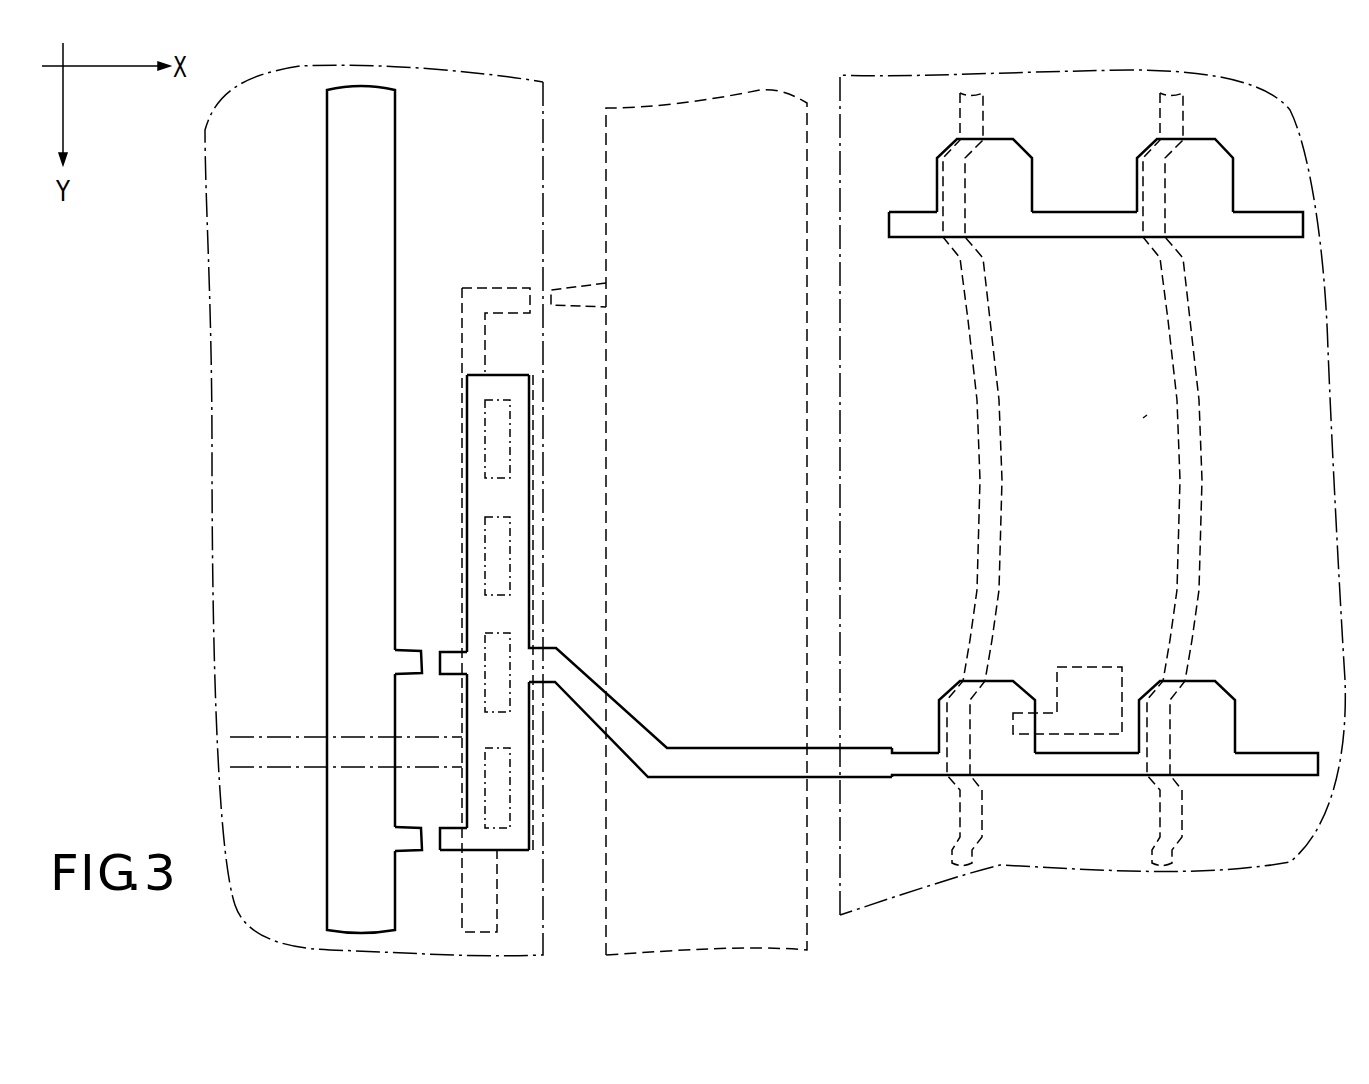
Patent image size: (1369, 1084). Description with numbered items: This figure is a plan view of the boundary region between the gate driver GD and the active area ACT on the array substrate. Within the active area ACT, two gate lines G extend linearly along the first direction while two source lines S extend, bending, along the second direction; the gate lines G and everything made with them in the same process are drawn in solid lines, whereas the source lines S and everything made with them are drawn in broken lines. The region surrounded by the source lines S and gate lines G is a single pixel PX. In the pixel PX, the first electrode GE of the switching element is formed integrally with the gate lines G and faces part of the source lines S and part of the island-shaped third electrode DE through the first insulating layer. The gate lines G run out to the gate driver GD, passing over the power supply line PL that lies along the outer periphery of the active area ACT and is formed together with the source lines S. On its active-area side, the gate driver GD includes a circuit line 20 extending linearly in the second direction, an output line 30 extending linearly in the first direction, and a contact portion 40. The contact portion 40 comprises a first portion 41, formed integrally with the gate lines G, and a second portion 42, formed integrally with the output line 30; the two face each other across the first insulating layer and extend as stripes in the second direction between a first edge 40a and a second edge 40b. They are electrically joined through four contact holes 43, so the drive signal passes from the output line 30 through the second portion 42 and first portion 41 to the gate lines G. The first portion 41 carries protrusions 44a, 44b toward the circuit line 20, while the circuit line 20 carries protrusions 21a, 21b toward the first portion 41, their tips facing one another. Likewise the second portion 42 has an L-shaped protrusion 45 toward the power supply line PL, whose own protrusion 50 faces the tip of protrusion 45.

The circuit line 20 is at (326, 175).
The protrusion 21a is at (405, 677).
The protrusion 21b is at (407, 852).
The output line 30 is at (272, 735).
The contact portion 40 is at (447, 370).
The first edge 40a is at (502, 362).
The second edge 40b is at (508, 858).
The first portion 41 is at (467, 414).
The second portion 42 is at (462, 462).
The contact holes 43 is at (506, 457).
The protrusion 44a is at (455, 652).
The protrusion 44b is at (455, 829).
The protrusion 45 is at (497, 285).
The protrusion 50 is at (578, 290).
The gate driver GD is at (207, 302).
The power supply line PL is at (683, 108).
The active area ACT is at (1300, 135).
The gate lines G is at (1263, 238).
The first electrode GE is at (1000, 681).
The third electrode DE is at (1088, 667).
The source lines S is at (987, 108).
The pixel PX is at (1147, 415).